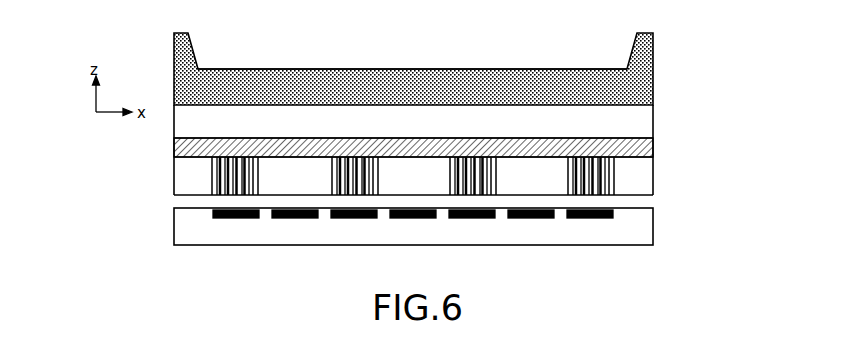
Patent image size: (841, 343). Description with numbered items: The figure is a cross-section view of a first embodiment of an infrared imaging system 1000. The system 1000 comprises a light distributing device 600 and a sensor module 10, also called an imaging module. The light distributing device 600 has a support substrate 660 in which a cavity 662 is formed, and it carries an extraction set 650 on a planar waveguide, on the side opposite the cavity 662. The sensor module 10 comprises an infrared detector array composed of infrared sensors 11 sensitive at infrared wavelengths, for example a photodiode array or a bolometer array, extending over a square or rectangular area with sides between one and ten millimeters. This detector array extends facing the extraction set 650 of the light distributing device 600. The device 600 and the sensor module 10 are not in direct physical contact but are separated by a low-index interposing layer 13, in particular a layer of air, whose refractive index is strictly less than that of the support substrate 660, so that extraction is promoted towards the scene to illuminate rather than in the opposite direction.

The infrared imaging system 1000 is at (427, 145).
The light distributing device 600 is at (404, 117).
The support substrate 660 is at (413, 55).
The cavity 662 is at (511, 58).
The extraction set 650 is at (197, 178).
The low-index interposing layer 13 is at (174, 201).
The sensor module 10 is at (438, 246).
The infrared sensors 11 is at (293, 218).